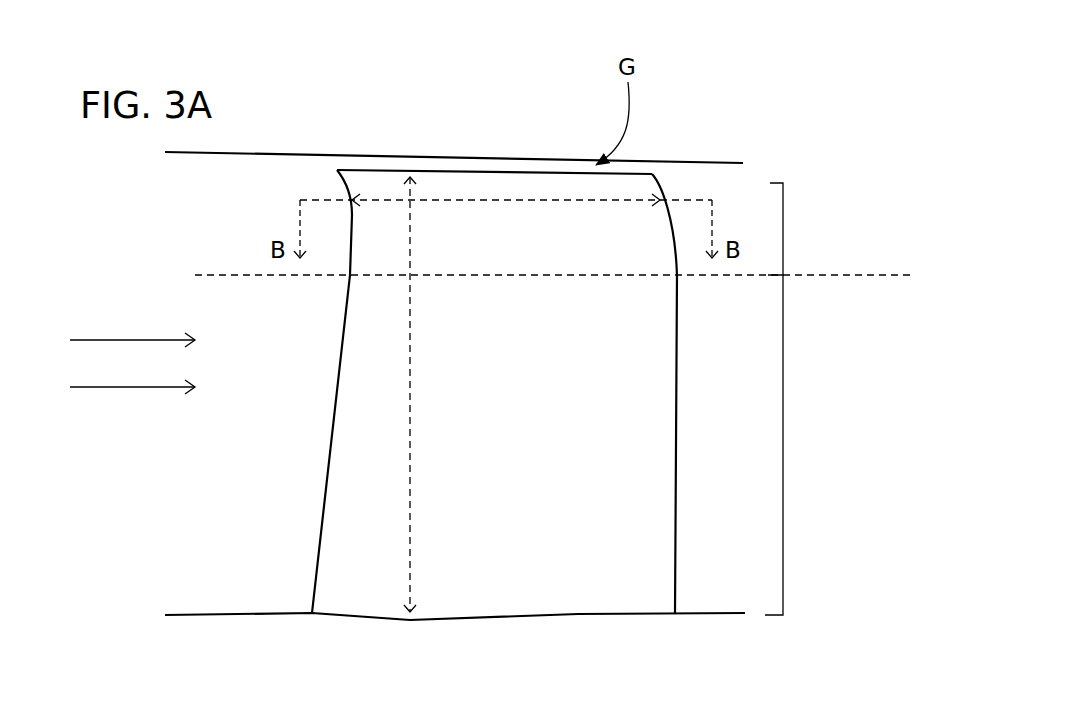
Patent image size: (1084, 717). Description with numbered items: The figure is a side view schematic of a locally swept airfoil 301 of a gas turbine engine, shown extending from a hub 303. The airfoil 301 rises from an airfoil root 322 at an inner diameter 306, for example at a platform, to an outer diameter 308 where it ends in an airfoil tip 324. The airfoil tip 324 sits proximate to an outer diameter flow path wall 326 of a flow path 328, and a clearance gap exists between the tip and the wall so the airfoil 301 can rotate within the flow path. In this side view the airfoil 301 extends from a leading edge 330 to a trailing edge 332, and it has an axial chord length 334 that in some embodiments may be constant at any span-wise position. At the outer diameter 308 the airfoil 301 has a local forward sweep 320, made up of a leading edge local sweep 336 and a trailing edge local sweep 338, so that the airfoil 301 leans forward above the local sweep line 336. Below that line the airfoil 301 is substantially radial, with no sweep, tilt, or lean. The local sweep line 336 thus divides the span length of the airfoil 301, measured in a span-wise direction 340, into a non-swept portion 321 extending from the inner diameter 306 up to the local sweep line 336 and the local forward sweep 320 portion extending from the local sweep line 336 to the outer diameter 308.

The airfoil 301 is at (509, 347).
The hub 303 is at (455, 658).
The inner diameter 306 is at (190, 581).
The outer diameter 308 is at (190, 203).
The local forward sweep 320 is at (783, 228).
The non-swept portion 321 is at (783, 445).
The airfoil root 322 is at (578, 617).
The airfoil tip 324 is at (518, 173).
The outer diameter flow path wall 326 is at (278, 172).
The flow path 328 is at (132, 363).
The leading edge 330 is at (318, 498).
The trailing edge 332 is at (677, 527).
The axial chord length 334 is at (506, 213).
The local sweep line 336 is at (362, 191).
The trailing edge local sweep 338 is at (675, 186).
The span-wise direction 340 is at (434, 394).